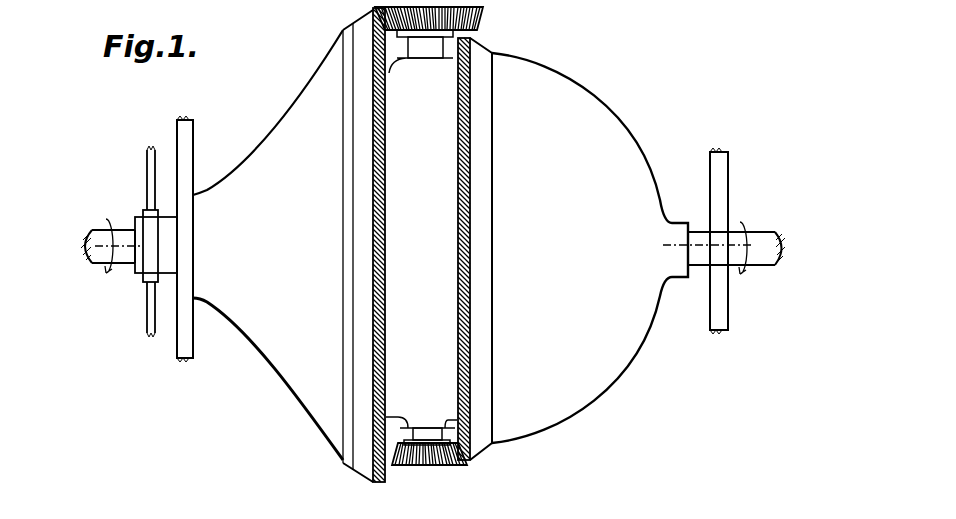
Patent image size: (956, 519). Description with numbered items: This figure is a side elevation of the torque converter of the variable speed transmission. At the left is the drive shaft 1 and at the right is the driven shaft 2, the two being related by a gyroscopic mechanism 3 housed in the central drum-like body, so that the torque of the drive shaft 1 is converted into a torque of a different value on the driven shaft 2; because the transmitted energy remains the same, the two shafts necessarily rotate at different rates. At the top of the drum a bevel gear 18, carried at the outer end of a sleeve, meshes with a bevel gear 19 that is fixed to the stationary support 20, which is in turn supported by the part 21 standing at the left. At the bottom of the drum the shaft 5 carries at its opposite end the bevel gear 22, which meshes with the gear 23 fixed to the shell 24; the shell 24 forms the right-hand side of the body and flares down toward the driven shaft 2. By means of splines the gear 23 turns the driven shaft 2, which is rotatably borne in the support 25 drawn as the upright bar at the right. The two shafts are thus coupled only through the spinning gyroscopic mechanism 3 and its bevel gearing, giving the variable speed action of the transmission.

The drive shaft 1 is at (94, 228).
The driven shaft 2 is at (765, 233).
The gyroscopic mechanism 3 is at (80, 243).
The shaft 5 is at (427, 436).
The bevel gear 18 is at (484, 18).
The bevel gear 19 is at (388, 97).
The stationary support 20 is at (315, 90).
The part 21 is at (187, 145).
The bevel gear 22 is at (445, 467).
The gear 23 is at (472, 376).
The shell 24 is at (574, 408).
The support 25 is at (148, 310).